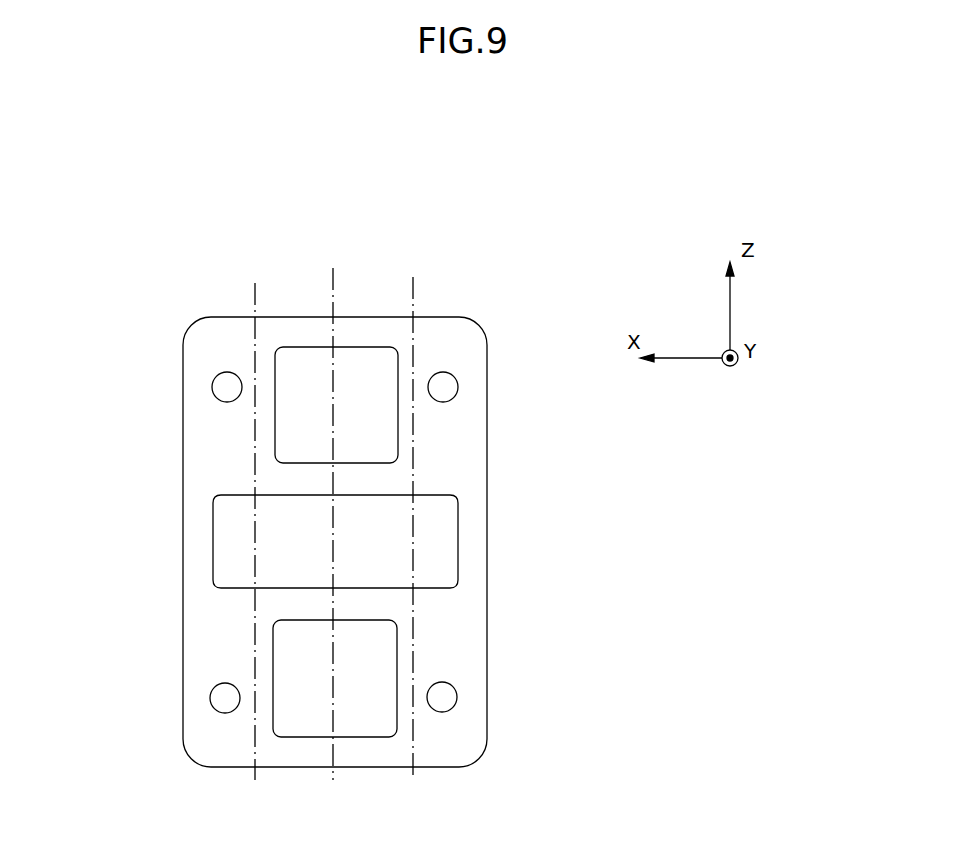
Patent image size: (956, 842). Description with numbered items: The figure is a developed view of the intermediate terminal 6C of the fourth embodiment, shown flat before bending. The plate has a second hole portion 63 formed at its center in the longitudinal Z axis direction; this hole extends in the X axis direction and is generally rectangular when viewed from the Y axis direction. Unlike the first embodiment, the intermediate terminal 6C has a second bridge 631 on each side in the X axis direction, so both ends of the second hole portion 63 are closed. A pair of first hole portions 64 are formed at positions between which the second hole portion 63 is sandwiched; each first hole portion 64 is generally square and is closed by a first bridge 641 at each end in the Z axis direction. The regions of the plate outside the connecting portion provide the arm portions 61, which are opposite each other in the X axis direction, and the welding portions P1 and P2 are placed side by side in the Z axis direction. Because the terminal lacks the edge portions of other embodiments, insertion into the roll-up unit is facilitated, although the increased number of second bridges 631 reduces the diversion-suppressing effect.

The intermediate terminal 6C is at (341, 486).
The arm portion 61 is at (183, 347).
The welding portion P1 is at (222, 388).
The welding portion P2 is at (222, 698).
The second hole portion 63 is at (296, 495).
The second bridge 631 is at (197, 537).
The first hole portion 64 is at (357, 347).
The first bridge 641 is at (365, 322).